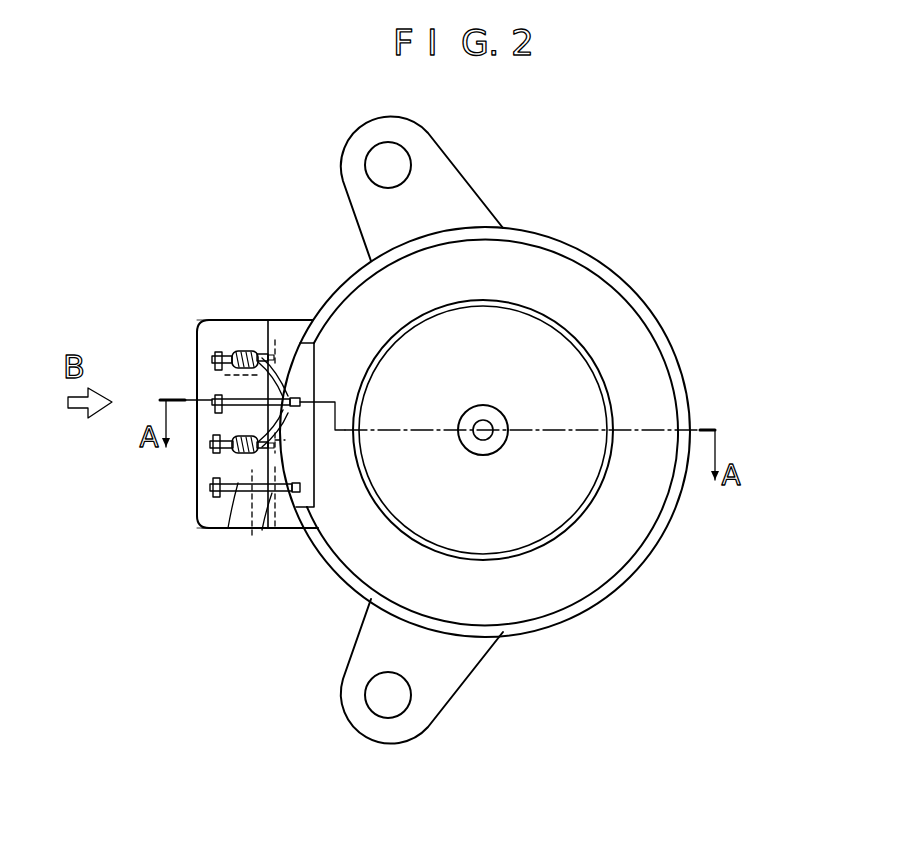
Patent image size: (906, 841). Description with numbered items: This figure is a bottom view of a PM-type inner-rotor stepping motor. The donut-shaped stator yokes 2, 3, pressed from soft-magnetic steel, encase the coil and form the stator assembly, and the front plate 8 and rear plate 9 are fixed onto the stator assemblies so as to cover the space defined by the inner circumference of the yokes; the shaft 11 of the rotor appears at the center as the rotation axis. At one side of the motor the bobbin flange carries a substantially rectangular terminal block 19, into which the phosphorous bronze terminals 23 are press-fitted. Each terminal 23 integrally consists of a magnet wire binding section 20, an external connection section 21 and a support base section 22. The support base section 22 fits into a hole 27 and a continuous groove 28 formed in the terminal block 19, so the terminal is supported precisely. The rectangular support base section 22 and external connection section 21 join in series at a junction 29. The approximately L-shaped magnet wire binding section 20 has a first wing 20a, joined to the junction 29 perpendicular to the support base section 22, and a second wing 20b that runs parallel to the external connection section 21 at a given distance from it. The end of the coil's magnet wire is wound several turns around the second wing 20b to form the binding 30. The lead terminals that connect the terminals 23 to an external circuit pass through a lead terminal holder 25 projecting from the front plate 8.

The stator yoke 2 is at (612, 318).
The stator yoke 3 is at (592, 263).
The front plate 8 is at (437, 195).
The rear plate 9 is at (648, 370).
The shaft 11 is at (487, 436).
The terminal block 19 is at (290, 335).
The magnet wire binding section 20 is at (337, 233).
The first wing 20a is at (291, 320).
The second wing 20b is at (253, 320).
The external connection section 21 is at (223, 383).
The support base section 22 is at (222, 380).
The terminal 23 is at (215, 335).
The lead terminal holder 25 is at (202, 530).
The hole 27 is at (270, 533).
The groove 28 is at (252, 535).
The junction 29 is at (228, 425).
The binding 30 is at (240, 347).